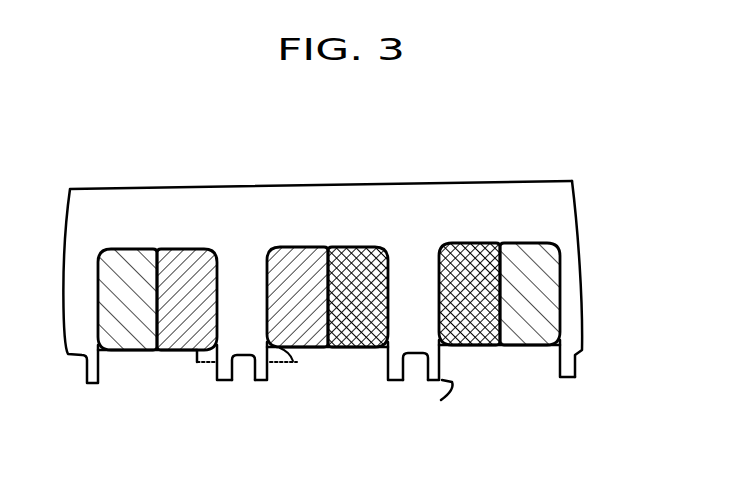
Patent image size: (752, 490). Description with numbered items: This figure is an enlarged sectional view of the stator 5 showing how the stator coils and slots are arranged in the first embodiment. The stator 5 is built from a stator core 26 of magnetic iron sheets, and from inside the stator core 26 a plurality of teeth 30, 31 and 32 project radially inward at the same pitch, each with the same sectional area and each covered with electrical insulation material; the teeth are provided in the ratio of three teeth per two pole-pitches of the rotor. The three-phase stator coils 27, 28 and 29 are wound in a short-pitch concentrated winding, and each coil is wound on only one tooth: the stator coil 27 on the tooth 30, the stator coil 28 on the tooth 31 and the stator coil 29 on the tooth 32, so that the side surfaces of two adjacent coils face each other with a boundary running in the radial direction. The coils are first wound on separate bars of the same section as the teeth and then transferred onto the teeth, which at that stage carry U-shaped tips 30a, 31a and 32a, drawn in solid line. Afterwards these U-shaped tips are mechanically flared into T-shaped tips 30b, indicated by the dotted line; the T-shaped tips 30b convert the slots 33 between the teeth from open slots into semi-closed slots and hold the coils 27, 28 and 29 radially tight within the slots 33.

The stator 5 is at (77, 164).
The stator core 26 is at (550, 196).
The stator coil 27 is at (178, 249).
The stator coil 28 is at (350, 247).
The stator coil 29 is at (128, 249).
The tooth 30 is at (245, 295).
The U-shaped tip 30a is at (247, 373).
The T-shaped tip 30b is at (202, 362).
The tooth 31 is at (410, 303).
The U-shaped tip 31a is at (407, 373).
The tooth 32 is at (567, 272).
The U-shaped tip 32a is at (576, 367).
The slot 33 is at (158, 357).